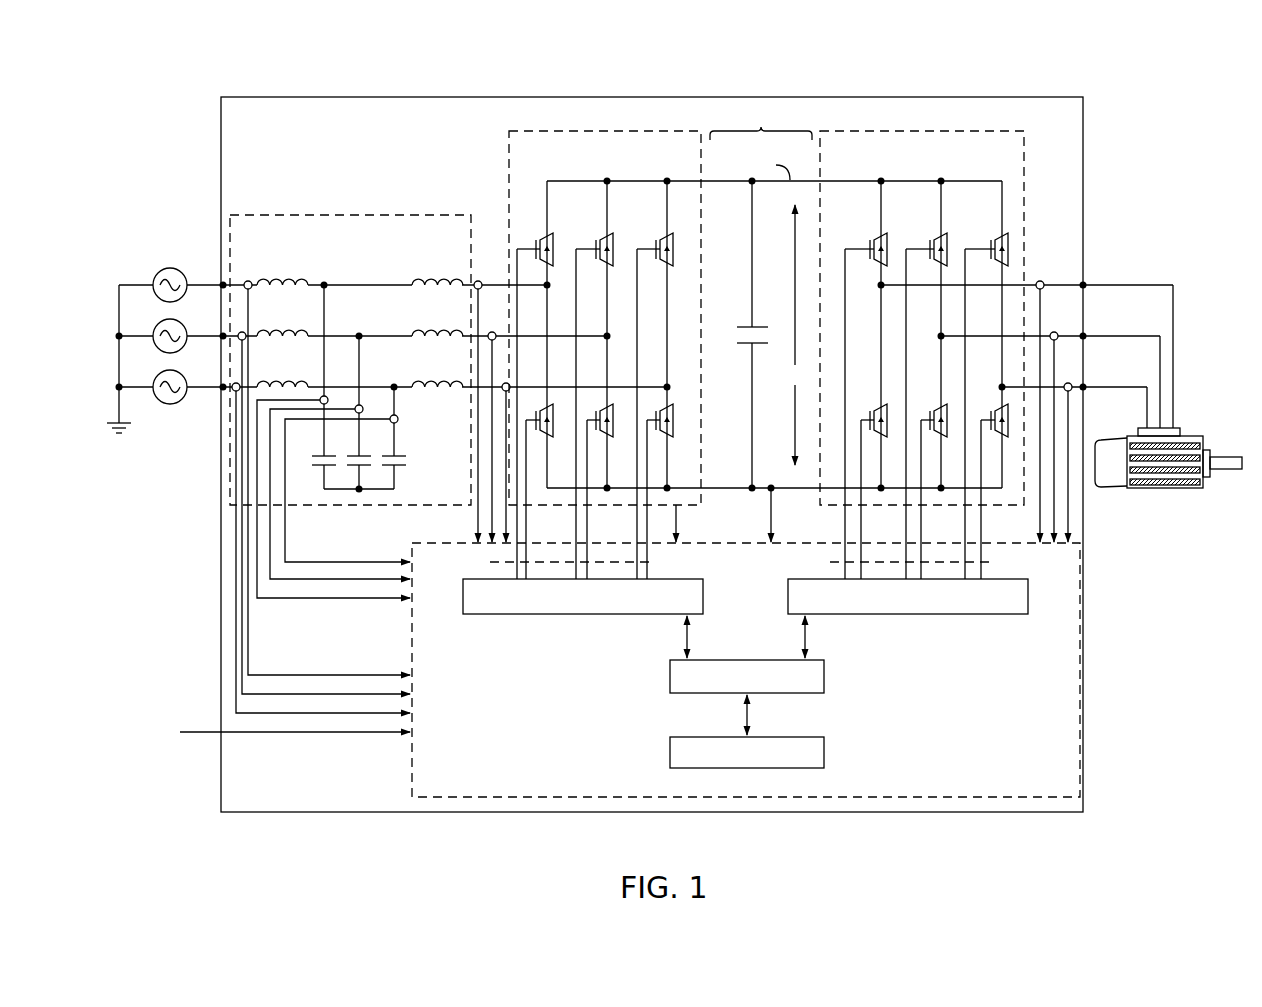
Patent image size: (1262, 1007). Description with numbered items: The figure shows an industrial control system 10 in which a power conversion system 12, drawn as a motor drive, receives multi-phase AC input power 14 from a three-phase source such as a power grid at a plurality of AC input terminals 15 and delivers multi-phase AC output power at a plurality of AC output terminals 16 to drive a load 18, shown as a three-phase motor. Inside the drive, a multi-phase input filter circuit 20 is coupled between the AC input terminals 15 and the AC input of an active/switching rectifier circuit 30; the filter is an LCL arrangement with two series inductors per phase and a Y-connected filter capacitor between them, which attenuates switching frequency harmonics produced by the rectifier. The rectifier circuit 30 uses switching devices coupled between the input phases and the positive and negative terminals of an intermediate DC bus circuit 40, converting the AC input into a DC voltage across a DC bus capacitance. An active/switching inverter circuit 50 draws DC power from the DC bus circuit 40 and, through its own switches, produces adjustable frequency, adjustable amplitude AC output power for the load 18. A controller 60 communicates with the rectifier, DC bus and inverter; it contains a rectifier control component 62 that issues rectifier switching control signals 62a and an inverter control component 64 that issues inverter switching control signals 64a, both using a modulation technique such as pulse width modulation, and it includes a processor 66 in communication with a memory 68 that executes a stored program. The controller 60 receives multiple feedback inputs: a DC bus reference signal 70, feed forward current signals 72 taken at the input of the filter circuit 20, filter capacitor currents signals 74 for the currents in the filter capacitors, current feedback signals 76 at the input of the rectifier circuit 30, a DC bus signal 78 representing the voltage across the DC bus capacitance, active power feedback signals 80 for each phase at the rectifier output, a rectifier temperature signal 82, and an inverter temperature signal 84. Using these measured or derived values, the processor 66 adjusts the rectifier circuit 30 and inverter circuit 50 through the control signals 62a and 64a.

The industrial control system 10 is at (1093, 68).
The power conversion system 12 is at (286, 97).
The multi-phase AC input power 14 is at (150, 262).
The AC input terminals 15 is at (212, 268).
The AC output terminals 16 is at (1097, 265).
The load 18 is at (1194, 437).
The multi-phase input filter circuit 20 is at (362, 215).
The active/switching rectifier circuit 30 is at (603, 131).
The intermediate DC bus circuit 40 is at (761, 131).
The active/switching inverter circuit 50 is at (923, 131).
The controller 60 is at (412, 776).
The rectifier control component 62 is at (463, 598).
The rectifier switching control signals 62a is at (490, 563).
The inverter control component 64 is at (788, 598).
The inverter switching control signals 64a is at (825, 563).
The processor 66 is at (680, 660).
The memory 68 is at (690, 737).
The DC bus reference signal 70 is at (278, 731).
The feed forward current signals 72 is at (312, 710).
The filter capacitor currents signals 74 is at (353, 600).
The current feedback signals 76 is at (468, 522).
The DC bus signal 78 is at (768, 522).
The active power feedback signals 80 is at (1034, 512).
The rectifier temperature signal 82 is at (680, 516).
The inverter temperature signal 84 is at (830, 514).